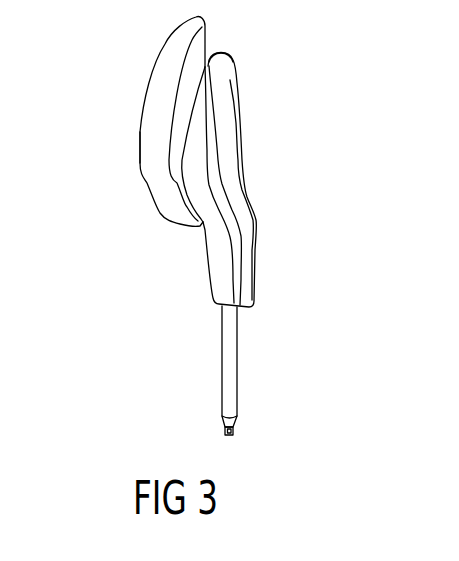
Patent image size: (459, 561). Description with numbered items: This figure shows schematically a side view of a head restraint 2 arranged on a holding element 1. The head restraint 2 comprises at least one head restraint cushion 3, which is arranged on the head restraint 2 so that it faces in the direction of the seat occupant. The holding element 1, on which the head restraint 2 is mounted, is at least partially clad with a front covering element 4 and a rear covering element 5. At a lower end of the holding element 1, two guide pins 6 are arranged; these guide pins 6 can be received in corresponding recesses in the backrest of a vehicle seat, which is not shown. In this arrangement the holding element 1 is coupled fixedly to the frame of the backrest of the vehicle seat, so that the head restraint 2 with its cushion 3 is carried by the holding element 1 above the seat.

The holding element 1 is at (233, 60).
The head restraint 2 is at (175, 58).
The head restraint cushion 3 is at (140, 132).
The front covering element 4 is at (207, 251).
The rear covering element 5 is at (241, 127).
The guide pins 6 is at (232, 367).